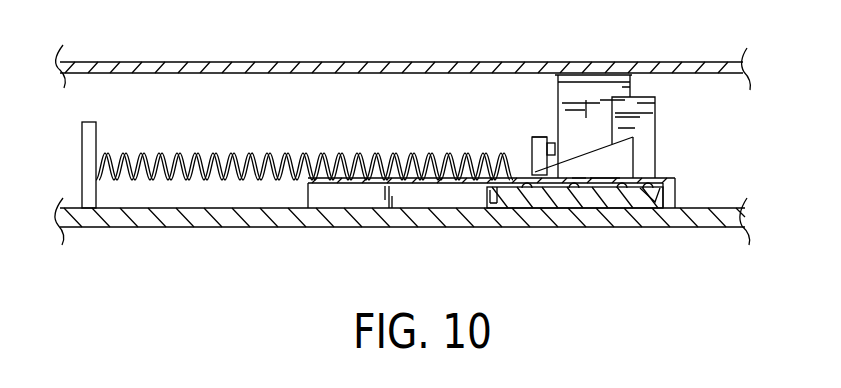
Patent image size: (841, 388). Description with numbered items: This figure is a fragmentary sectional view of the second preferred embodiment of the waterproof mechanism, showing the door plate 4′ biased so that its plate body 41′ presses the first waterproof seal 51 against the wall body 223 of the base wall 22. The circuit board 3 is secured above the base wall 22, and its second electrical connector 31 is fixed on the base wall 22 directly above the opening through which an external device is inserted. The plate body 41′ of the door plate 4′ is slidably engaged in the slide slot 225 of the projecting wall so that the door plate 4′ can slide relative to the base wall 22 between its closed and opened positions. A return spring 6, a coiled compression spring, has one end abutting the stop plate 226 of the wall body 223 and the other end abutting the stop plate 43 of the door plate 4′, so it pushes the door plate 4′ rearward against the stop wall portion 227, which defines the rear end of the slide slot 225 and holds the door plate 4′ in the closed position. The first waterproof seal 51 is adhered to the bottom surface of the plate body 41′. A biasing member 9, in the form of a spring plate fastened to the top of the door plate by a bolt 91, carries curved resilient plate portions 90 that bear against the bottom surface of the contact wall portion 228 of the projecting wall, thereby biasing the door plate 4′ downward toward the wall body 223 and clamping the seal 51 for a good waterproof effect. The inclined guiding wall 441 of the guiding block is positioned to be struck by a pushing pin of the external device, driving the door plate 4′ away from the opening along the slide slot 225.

The circuit board 3 is at (724, 62).
The base wall 22 is at (725, 192).
The wall body 223 is at (705, 217).
The slide slot 225 is at (310, 195).
The stop plate 226 is at (90, 138).
The stop wall portion 227 is at (675, 192).
The contact wall portion 228 is at (602, 180).
The return spring 6 is at (265, 155).
The biasing member 9 is at (533, 166).
The stop plate 43 is at (540, 137).
The curved resilient plate portion 90 is at (578, 180).
The inclined guiding wall 441 is at (590, 118).
The door plate 4′ is at (582, 178).
The second electrical connector 31 is at (630, 90).
The bolt 91 is at (500, 198).
The first waterproof seal 51 is at (547, 207).
The plate body 41′ is at (590, 192).